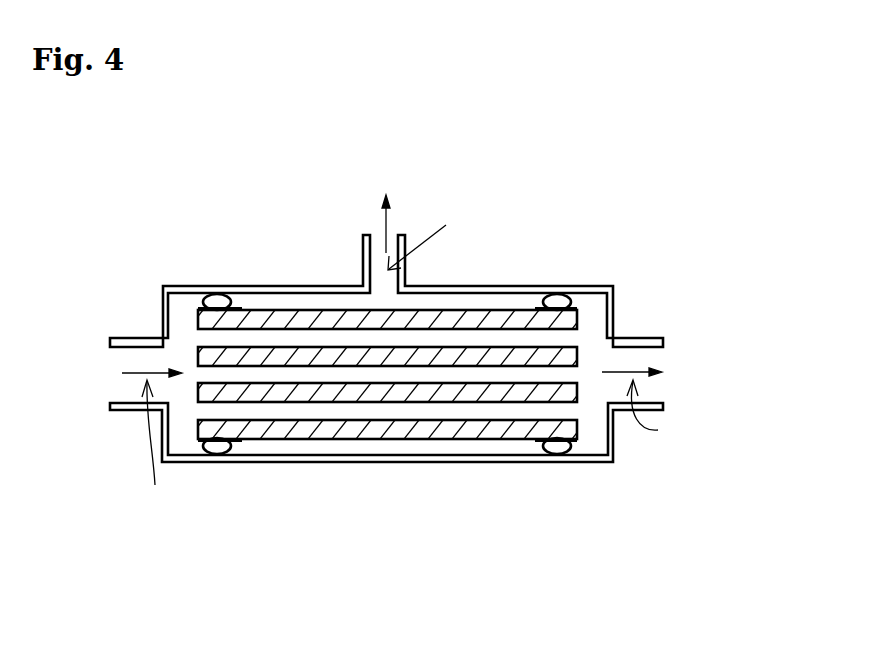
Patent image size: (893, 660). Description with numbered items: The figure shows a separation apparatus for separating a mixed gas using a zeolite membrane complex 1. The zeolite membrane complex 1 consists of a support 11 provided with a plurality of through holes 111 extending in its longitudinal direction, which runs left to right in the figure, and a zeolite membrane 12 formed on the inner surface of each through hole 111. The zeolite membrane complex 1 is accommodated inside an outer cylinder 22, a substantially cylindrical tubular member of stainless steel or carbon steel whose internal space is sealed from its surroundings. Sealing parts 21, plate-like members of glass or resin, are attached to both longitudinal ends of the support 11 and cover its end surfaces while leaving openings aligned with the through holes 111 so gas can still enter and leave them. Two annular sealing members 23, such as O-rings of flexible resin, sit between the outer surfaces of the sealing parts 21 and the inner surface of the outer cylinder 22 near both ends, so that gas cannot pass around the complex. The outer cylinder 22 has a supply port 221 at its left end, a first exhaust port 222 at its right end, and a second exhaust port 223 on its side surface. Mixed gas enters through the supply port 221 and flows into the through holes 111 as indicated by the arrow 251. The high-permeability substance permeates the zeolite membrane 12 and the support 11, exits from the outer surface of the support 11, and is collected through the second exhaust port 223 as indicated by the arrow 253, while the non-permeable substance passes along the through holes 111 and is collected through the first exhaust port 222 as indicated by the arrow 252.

The zeolite membrane complex 1 is at (388, 413).
The support 11 is at (458, 436).
The through holes 111 is at (265, 374).
The zeolite membrane 12 is at (367, 367).
The sealing parts 21 is at (197, 321).
The outer cylinder 22 is at (503, 285).
The supply port 221 is at (154, 446).
The first exhaust port 222 is at (669, 413).
The second exhaust port 223 is at (430, 234).
The sealing members 23 is at (214, 299).
The arrow indicating introduction of mixed gas 251 is at (133, 376).
The arrow indicating collection of non-permeable substance 252 is at (632, 368).
The arrow indicating collection of permeable substance 253 is at (380, 226).